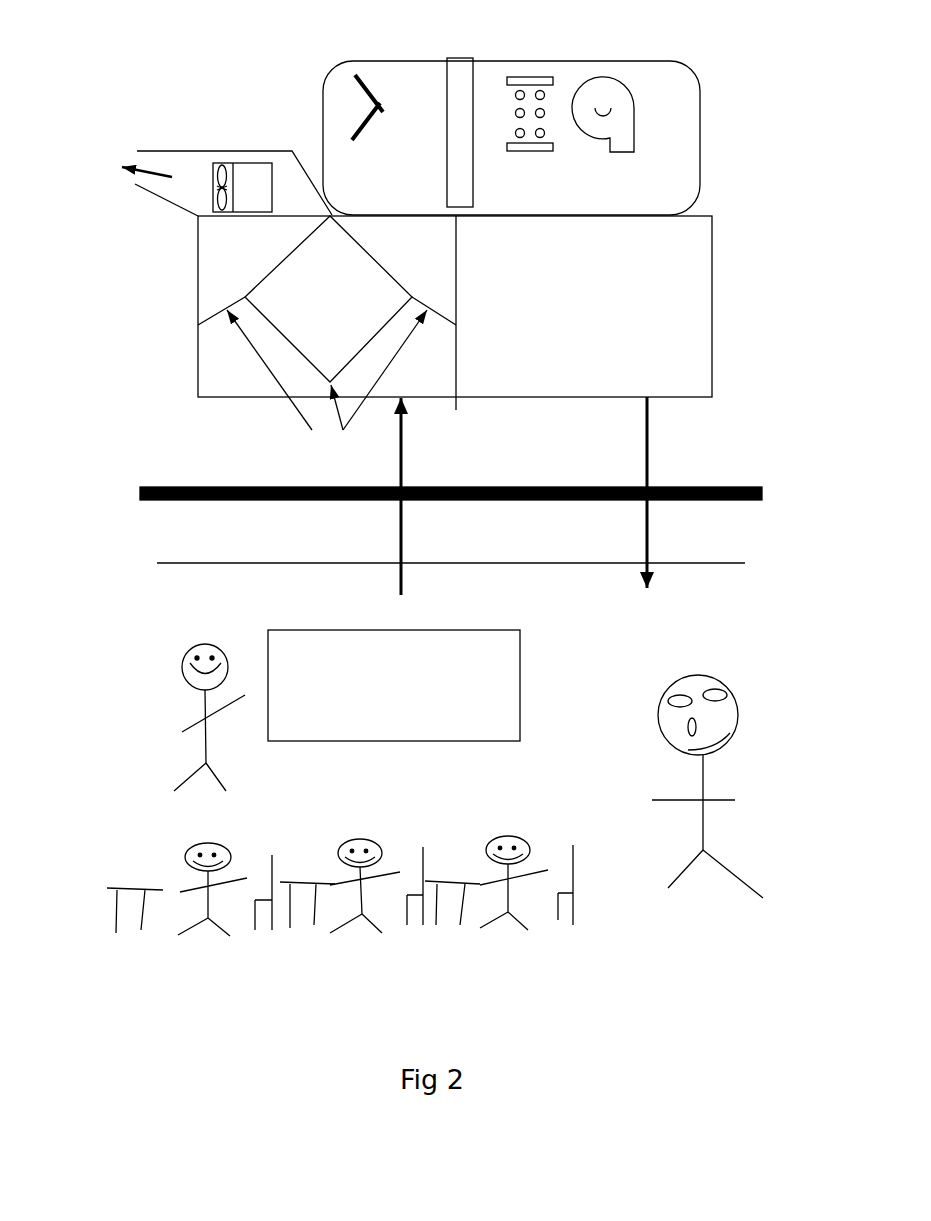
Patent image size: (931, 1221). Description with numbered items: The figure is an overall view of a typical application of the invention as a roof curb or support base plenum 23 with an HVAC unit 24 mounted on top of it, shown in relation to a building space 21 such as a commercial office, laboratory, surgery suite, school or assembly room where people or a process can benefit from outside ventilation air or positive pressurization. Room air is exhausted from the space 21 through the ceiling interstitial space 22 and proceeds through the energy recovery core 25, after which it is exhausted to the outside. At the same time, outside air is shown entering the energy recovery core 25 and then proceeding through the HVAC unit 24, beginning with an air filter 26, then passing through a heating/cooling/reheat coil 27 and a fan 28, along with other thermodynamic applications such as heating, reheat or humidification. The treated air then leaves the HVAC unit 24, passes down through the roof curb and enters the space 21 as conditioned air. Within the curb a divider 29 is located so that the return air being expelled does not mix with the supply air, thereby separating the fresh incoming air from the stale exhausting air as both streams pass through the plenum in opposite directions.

The space 21 is at (435, 773).
The ceiling interstitial space 22 is at (451, 525).
The housing 23 is at (475, 313).
The hvac unit 24 is at (538, 138).
The energy recovery core 25 is at (327, 299).
The air filter 26 is at (459, 107).
The heating/cooling/reheat coil 27 is at (529, 79).
The fan 28 is at (603, 80).
The divider 29 is at (327, 386).